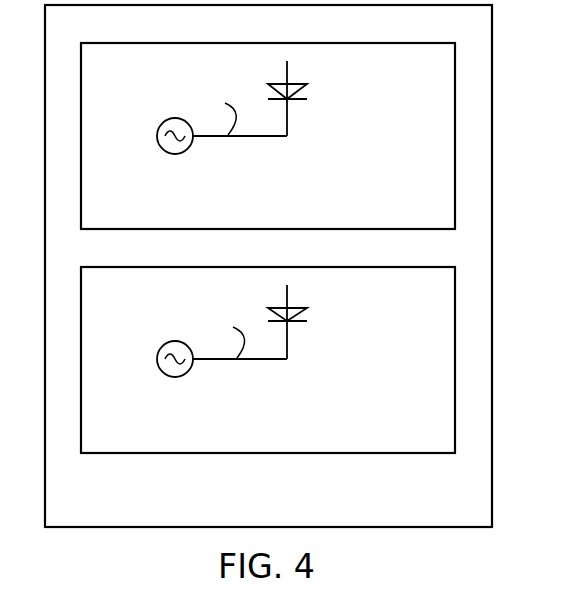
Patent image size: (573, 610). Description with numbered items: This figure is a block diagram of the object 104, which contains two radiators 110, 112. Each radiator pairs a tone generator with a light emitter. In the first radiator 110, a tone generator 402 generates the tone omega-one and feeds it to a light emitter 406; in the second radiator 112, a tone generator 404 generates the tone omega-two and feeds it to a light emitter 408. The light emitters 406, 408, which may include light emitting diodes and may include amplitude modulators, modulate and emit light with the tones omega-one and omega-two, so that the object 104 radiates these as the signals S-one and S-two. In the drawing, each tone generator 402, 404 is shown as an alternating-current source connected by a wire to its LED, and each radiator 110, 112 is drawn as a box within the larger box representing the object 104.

The object 104 is at (327, 516).
The radiator 110 is at (447, 218).
The radiator 112 is at (447, 440).
The tone generator 402 is at (161, 152).
The tone generator 404 is at (173, 377).
The light emitter 406 is at (305, 86).
The light emitter 408 is at (305, 310).